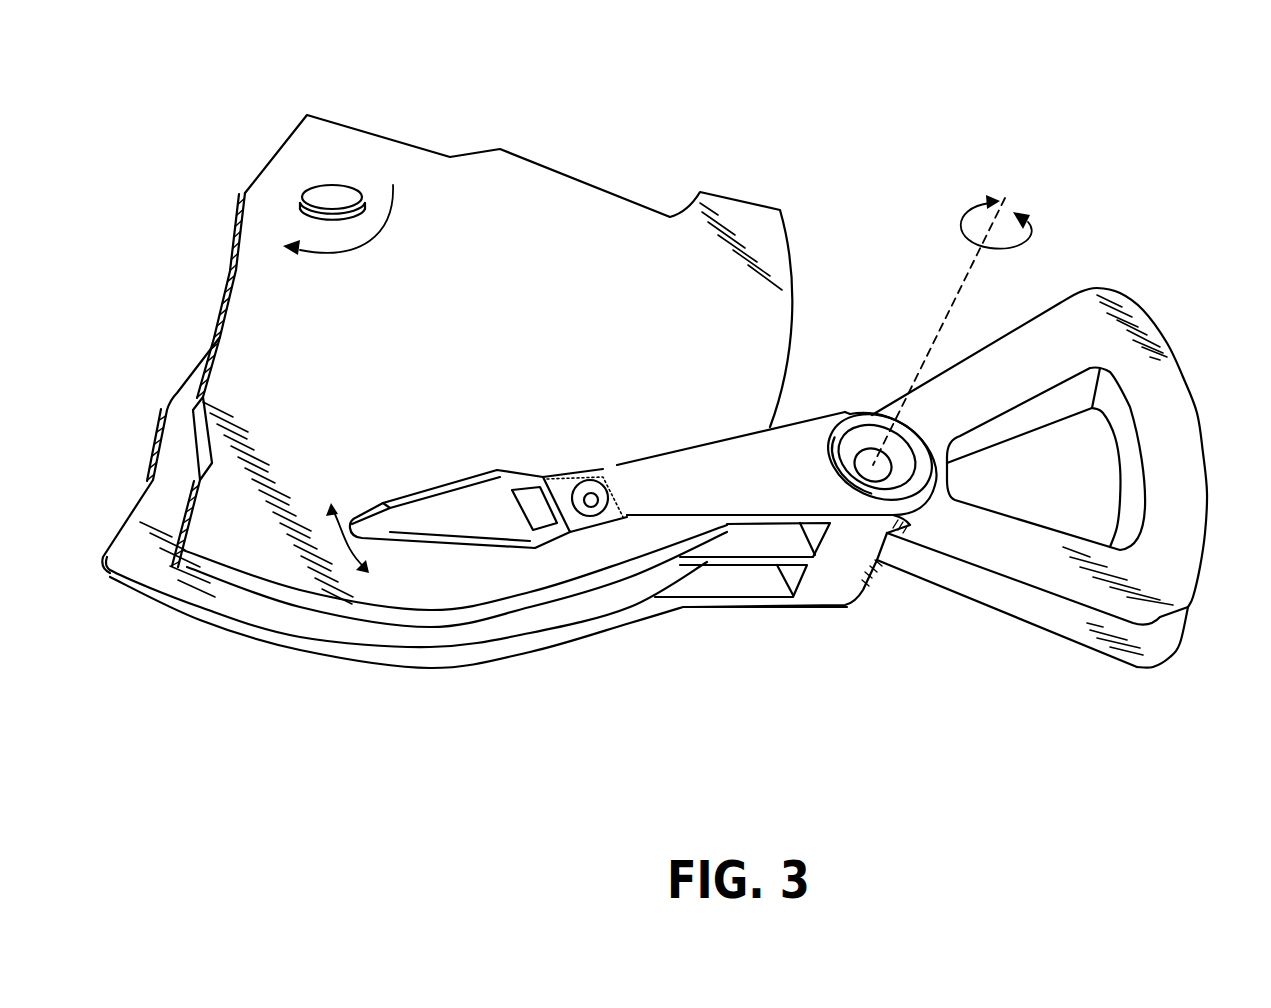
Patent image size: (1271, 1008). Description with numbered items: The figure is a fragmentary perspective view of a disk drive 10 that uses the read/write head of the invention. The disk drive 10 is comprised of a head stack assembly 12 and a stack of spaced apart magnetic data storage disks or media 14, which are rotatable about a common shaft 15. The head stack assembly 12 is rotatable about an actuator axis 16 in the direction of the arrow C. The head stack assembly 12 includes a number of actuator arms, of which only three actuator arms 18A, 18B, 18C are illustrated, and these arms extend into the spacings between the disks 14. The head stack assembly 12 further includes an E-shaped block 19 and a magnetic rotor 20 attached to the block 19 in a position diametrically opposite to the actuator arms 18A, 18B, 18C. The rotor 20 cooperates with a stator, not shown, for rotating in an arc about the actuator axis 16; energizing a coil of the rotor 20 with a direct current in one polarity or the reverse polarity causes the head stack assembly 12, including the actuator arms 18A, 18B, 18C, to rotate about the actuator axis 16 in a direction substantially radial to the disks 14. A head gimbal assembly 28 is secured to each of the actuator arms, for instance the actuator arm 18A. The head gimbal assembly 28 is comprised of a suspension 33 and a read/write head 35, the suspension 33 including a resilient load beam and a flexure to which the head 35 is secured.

The disk drive 10 is at (640, 72).
The head stack assembly 12 is at (841, 652).
The magnetic data storage disks 14 is at (532, 257).
The common shaft 15 is at (313, 197).
The actuator axis 16 is at (972, 272).
The actuator arm 18A is at (733, 396).
The actuator arm 18B is at (720, 558).
The actuator arm 18C is at (750, 598).
The E-shaped block 19 is at (849, 600).
The magnetic rotor 20 is at (1023, 608).
The head gimbal assembly 28 is at (452, 462).
The suspension 33 is at (497, 530).
The read/write head 35 is at (347, 538).